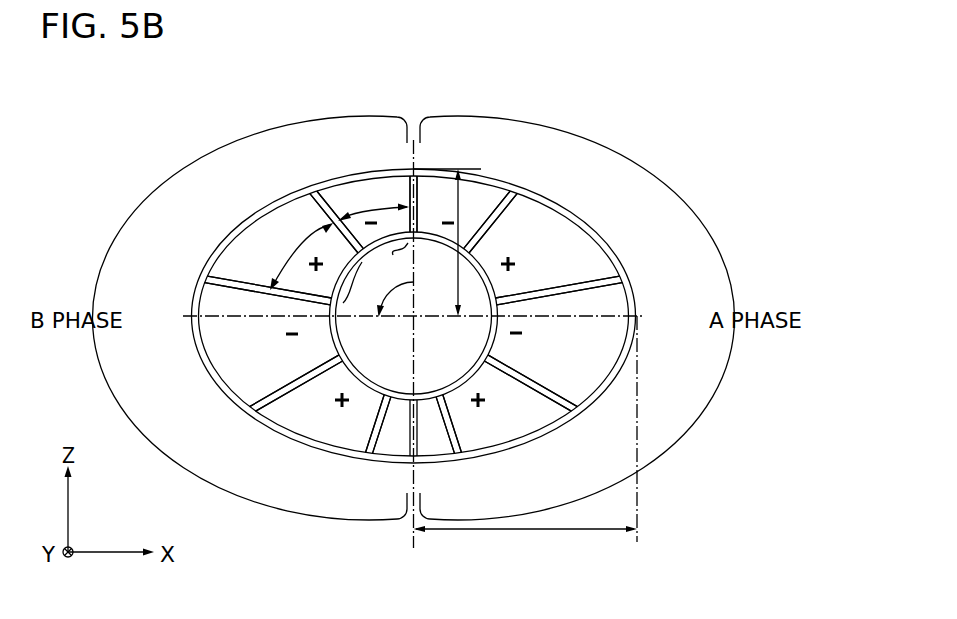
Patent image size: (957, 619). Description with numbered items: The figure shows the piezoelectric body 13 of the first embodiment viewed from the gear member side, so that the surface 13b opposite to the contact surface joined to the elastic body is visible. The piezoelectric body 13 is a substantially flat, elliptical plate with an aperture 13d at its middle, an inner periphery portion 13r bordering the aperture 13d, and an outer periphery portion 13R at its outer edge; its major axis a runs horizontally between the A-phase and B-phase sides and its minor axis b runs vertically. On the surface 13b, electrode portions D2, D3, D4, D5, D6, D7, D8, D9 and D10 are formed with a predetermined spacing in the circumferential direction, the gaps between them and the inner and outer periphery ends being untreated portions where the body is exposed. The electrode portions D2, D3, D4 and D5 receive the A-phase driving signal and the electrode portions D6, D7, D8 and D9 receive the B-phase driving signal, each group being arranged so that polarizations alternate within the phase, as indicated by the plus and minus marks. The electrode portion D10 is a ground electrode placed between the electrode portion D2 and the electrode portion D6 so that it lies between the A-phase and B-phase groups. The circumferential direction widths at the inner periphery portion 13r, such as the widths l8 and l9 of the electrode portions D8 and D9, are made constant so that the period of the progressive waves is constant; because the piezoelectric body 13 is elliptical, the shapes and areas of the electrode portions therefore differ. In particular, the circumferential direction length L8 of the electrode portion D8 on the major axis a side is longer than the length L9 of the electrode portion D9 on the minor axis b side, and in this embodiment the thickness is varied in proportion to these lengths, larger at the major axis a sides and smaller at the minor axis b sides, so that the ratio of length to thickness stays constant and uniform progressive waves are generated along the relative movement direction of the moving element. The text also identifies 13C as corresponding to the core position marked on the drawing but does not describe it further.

The piezoelectric body 13 is at (248, 116).
The surface opposite to the contact surface 13b is at (618, 142).
The outer periphery portion 13R is at (317, 443).
The stator core 13C is at (627, 267).
The inner periphery portion 13r is at (447, 244).
The aperture 13d is at (414, 316).
The electrode portion D2 is at (510, 432).
The electrode portion D3 is at (575, 385).
The electrode portion D4 is at (573, 243).
The electrode portion D5 is at (505, 197).
The electrode portion D6 is at (293, 420).
The electrode portion D7 is at (233, 373).
The electrode portion D8 is at (218, 273).
The electrode portion D9 is at (338, 197).
The electrode portion D10 is at (393, 443).
The circumferential direction length L8 is at (302, 243).
The circumferential direction length L9 is at (380, 208).
The circumferential direction width l8 is at (358, 282).
The circumferential direction width l9 is at (397, 261).
The major axis a is at (560, 532).
The minor axis b is at (460, 203).